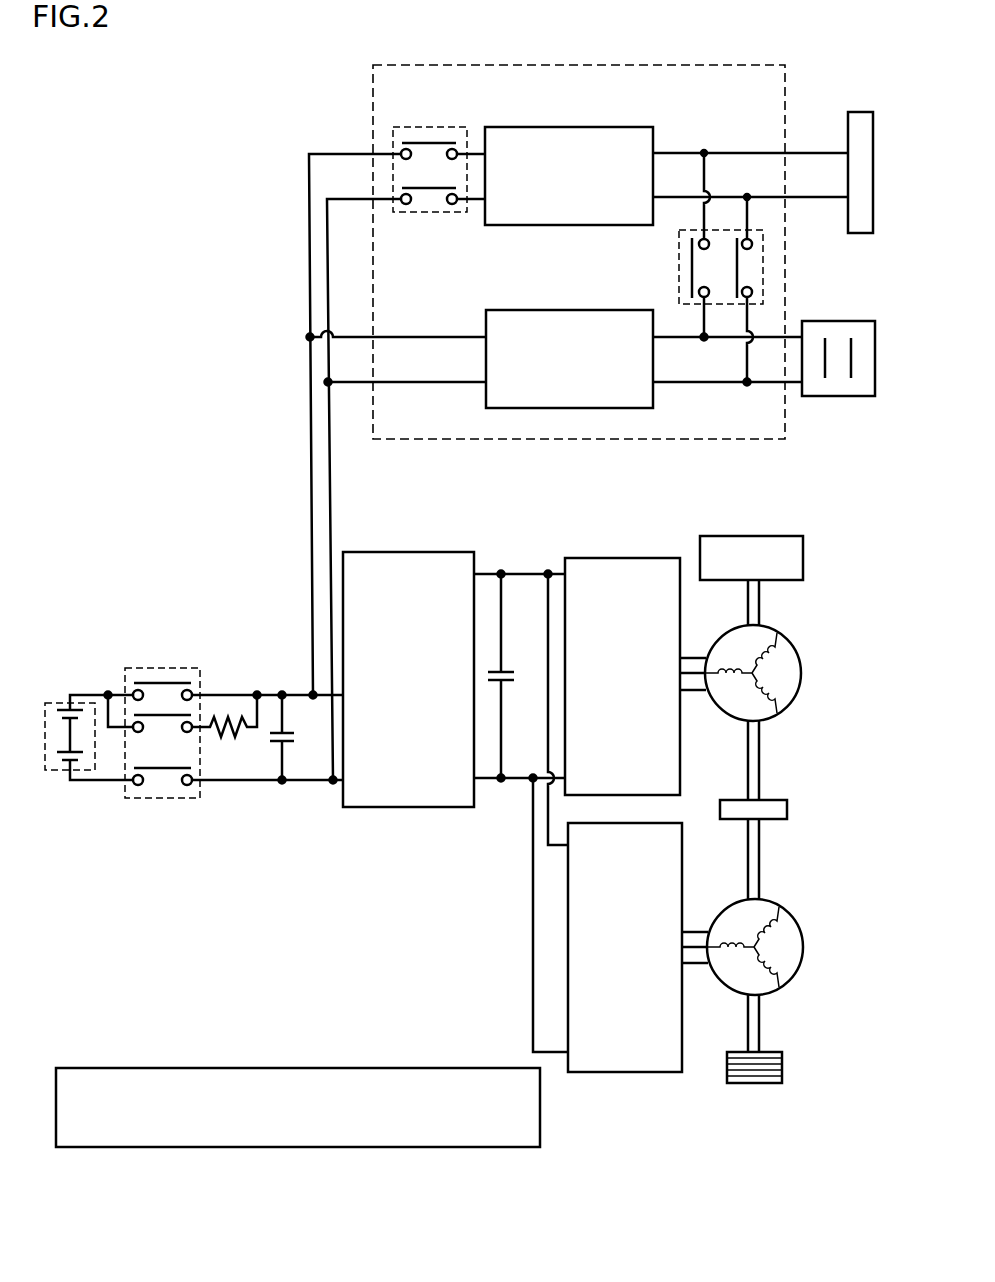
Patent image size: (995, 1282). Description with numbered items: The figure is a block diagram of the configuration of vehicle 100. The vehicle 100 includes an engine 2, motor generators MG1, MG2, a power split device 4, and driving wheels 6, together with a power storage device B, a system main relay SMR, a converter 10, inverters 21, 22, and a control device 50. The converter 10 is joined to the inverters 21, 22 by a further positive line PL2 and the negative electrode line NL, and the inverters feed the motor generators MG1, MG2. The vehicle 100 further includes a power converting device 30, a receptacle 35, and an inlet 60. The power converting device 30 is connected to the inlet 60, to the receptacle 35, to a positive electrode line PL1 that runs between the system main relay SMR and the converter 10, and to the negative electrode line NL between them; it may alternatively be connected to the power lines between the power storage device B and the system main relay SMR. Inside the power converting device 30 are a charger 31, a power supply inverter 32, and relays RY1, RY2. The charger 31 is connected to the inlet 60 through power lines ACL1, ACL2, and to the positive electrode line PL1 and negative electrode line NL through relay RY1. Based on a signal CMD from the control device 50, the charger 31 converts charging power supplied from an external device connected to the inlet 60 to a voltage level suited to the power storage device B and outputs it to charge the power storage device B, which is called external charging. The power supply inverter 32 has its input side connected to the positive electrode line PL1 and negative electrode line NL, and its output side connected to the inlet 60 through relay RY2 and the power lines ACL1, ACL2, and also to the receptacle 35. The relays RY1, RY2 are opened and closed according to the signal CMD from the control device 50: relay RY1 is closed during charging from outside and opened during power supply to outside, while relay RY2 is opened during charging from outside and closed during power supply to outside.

The vehicle 100 is at (204, 85).
The power converting device 30 is at (705, 65).
The charger 31 is at (565, 127).
The power supply inverter 32 is at (569, 310).
The receptacle 35 is at (834, 321).
The inlet 60 is at (856, 112).
The converter 10 is at (405, 1068).
The inverter 21 is at (515, 1068).
The inverter 22 is at (540, 1115).
The engine 2 is at (770, 536).
The power split device 4 is at (775, 800).
The driving wheels 6 is at (772, 1052).
The control device 50 is at (296, 1068).
The power storage device B is at (58, 703).
The system main relay SMR is at (165, 1068).
The relay RY1 is at (430, 127).
The relay RY2 is at (679, 262).
The power line ACL1 is at (816, 152).
The power line ACL2 is at (816, 198).
The positive electrode line PL1 is at (268, 694).
The second positive line PL2 is at (521, 573).
The negative electrode line NL is at (272, 782).
The signal CMD is at (581, 441).
The motor generator MG1 is at (795, 700).
The motor generator MG2 is at (797, 975).